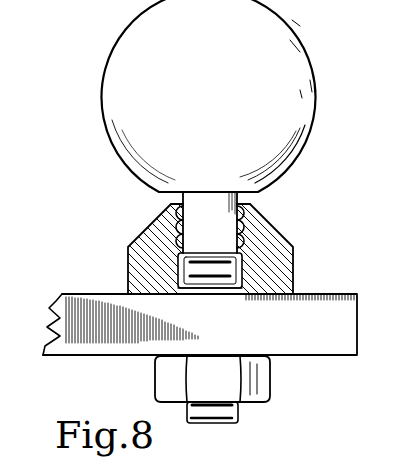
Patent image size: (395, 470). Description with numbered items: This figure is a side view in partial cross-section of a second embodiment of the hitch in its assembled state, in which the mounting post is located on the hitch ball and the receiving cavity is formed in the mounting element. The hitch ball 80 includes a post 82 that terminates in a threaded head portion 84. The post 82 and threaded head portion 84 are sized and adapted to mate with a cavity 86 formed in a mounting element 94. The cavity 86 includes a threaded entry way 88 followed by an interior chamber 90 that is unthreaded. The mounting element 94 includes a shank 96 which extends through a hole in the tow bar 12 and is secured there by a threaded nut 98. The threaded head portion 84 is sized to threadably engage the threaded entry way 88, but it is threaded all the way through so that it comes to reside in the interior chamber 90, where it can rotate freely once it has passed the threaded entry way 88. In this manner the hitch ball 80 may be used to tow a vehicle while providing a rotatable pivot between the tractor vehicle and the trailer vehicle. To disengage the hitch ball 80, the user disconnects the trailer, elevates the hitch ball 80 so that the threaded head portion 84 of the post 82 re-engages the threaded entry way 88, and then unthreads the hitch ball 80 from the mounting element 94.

The hitch ball 80 is at (280, 65).
The post 82 is at (222, 200).
The threaded head portion 84 is at (256, 253).
The cavity 86 is at (170, 203).
The threaded entry way 88 is at (178, 232).
The interior chamber 90 is at (173, 288).
The mounting element 94 is at (243, 264).
The tow bar 12 is at (108, 310).
The threaded nut 98 is at (257, 372).
The shank 96 is at (224, 424).